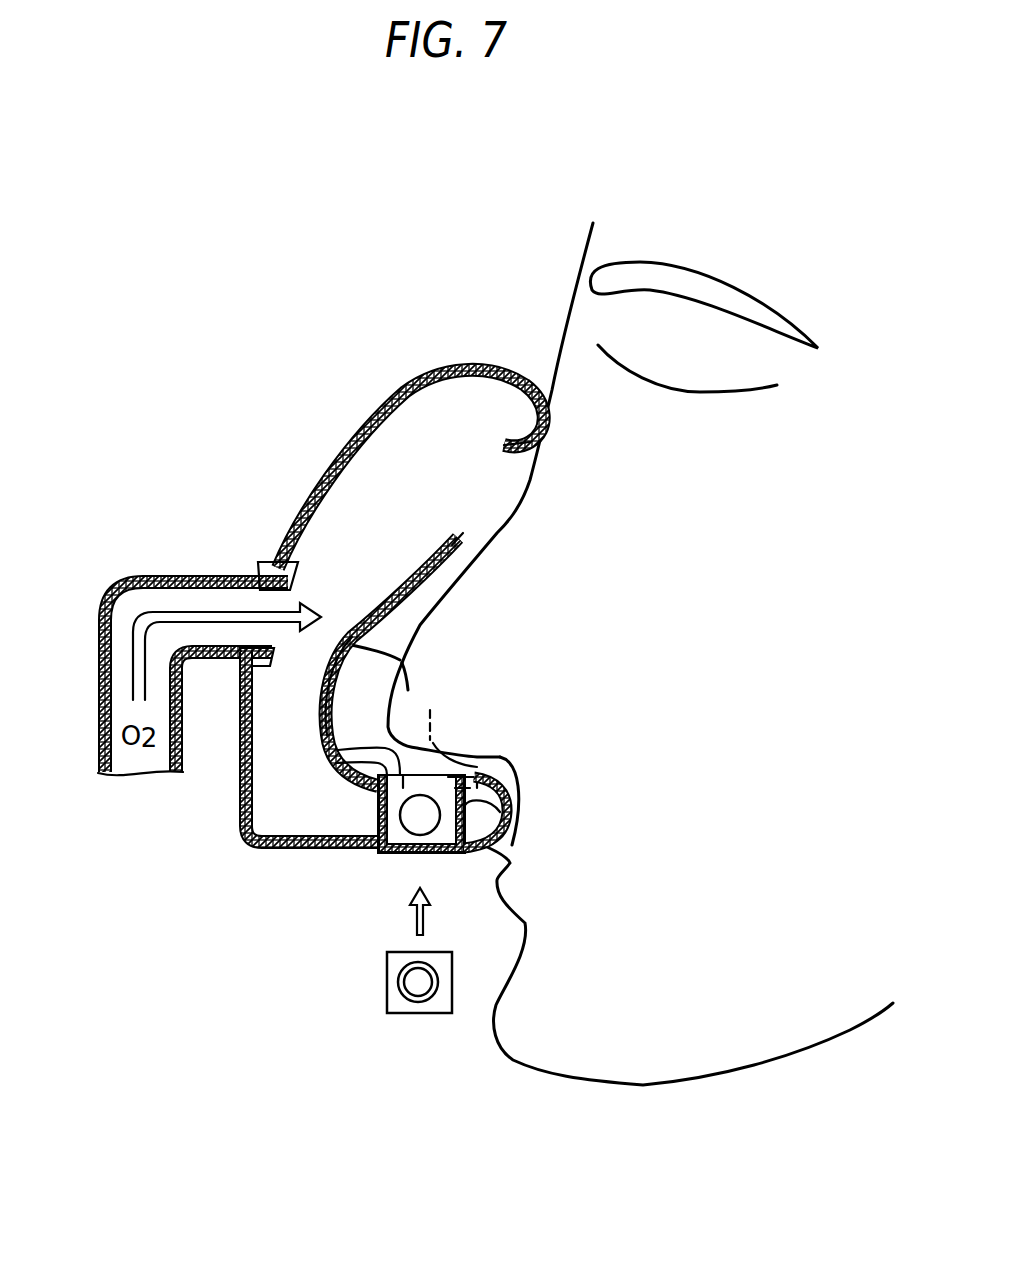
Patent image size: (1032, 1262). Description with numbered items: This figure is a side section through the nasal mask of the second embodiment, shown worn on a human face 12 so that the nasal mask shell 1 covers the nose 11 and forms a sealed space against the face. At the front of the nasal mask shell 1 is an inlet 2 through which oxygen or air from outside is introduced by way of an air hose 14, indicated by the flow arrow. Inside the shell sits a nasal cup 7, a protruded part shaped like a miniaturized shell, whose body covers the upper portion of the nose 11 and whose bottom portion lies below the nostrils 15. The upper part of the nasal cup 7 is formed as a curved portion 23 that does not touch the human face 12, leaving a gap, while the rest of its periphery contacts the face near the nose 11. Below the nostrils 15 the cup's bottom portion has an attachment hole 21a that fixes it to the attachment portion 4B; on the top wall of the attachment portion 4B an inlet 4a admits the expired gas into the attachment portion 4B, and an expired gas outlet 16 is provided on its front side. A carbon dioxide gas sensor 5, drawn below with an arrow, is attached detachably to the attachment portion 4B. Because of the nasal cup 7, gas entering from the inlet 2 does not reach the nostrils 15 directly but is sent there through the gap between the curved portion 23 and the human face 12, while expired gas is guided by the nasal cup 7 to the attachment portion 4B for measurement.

The nasal mask shell 1 is at (357, 437).
The inlet 2 is at (263, 600).
The inlet 4a is at (403, 773).
The attachment portion 4B is at (500, 812).
The carbon dioxide gas sensor 5 is at (393, 1003).
The nasal cup 7 is at (402, 572).
The nose 11 is at (350, 637).
The human face 12 is at (600, 518).
The air hose 14 is at (103, 613).
The nostrils 15 is at (478, 772).
The expired gas outlet 16 is at (363, 840).
The attachment hole 21a is at (333, 765).
The curved portion 23 is at (457, 537).